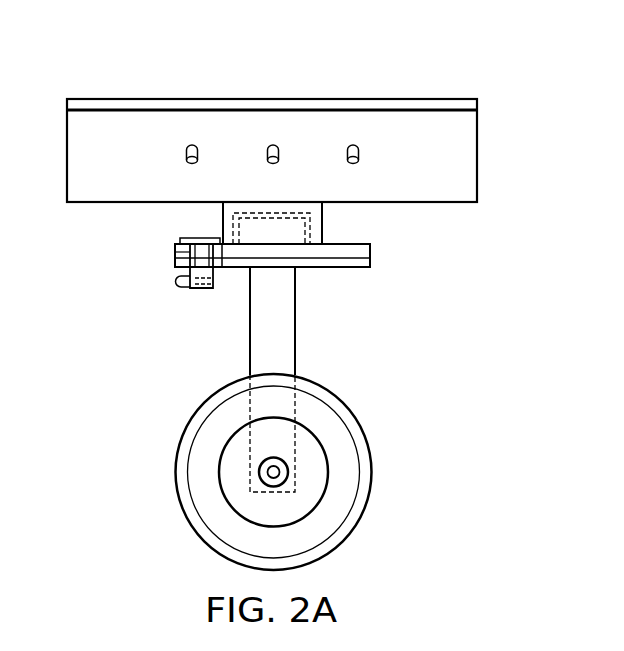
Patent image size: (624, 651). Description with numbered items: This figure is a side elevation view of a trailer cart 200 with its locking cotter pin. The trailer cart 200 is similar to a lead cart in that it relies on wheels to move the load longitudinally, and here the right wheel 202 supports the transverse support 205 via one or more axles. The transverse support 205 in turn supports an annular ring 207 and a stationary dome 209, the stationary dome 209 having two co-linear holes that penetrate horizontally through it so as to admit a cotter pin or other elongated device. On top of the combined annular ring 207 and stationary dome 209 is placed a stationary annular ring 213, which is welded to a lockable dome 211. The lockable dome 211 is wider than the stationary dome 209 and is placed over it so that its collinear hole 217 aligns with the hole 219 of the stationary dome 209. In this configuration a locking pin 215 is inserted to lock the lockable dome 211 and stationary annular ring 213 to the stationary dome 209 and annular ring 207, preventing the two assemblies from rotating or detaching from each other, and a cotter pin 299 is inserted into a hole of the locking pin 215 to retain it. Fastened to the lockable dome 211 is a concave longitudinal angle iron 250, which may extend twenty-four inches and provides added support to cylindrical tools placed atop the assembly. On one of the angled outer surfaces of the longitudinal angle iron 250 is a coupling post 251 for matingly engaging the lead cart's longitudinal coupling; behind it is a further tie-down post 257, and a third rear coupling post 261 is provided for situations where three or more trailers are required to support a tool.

The trailer cart 200 is at (153, 63).
The longitudinal angle iron 250 is at (477, 152).
The third rear coupling post 261 is at (186, 162).
The tie-down post 257 is at (273, 144).
The coupling post 251 is at (358, 162).
The lockable dome 211 is at (222, 212).
The stationary dome 209 is at (295, 216).
The annular ring 207 is at (370, 261).
The stationary annular ring 213 is at (370, 252).
The locking pin 215 is at (200, 238).
The collinear hole 217 is at (175, 250).
The cotter pin 299 is at (178, 282).
The hole 219 is at (216, 268).
The transverse support 205 is at (295, 338).
The right wheel 202 is at (176, 470).